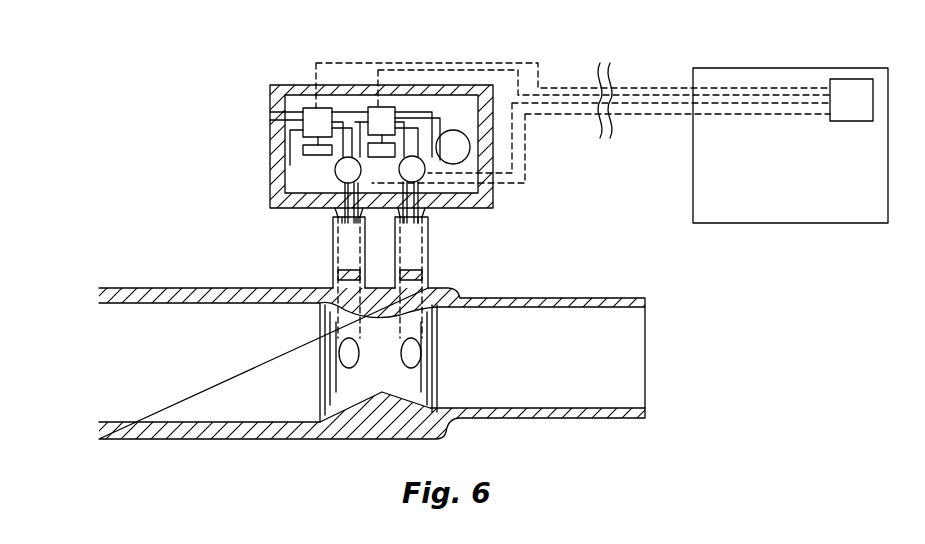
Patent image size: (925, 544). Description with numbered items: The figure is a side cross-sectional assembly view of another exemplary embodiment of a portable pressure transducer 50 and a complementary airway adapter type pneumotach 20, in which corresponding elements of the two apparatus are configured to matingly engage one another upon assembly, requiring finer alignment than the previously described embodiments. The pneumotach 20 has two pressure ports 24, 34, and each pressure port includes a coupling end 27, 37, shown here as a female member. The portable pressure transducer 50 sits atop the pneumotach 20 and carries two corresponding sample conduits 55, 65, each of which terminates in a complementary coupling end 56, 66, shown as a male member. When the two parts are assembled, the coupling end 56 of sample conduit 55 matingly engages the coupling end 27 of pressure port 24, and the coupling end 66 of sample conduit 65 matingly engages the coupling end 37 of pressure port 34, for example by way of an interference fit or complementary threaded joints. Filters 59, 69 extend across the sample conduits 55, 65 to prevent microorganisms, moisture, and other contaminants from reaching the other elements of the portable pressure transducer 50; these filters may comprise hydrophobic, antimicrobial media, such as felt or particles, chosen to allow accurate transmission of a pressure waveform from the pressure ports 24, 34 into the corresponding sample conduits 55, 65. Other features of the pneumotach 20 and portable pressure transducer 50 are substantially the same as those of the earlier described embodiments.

The pneumotach 20 is at (118, 270).
The portable pressure transducer 50 is at (246, 92).
The sample conduit 55 is at (402, 148).
The sample conduit 65 is at (336, 166).
The filter 69 is at (342, 195).
The coupling end 66 is at (337, 213).
The coupling end 37 is at (333, 233).
The pressure port 34 is at (343, 260).
The filter 59 is at (425, 208).
The coupling end 56 is at (427, 212).
The coupling end 27 is at (427, 230).
The pressure port 24 is at (410, 257).